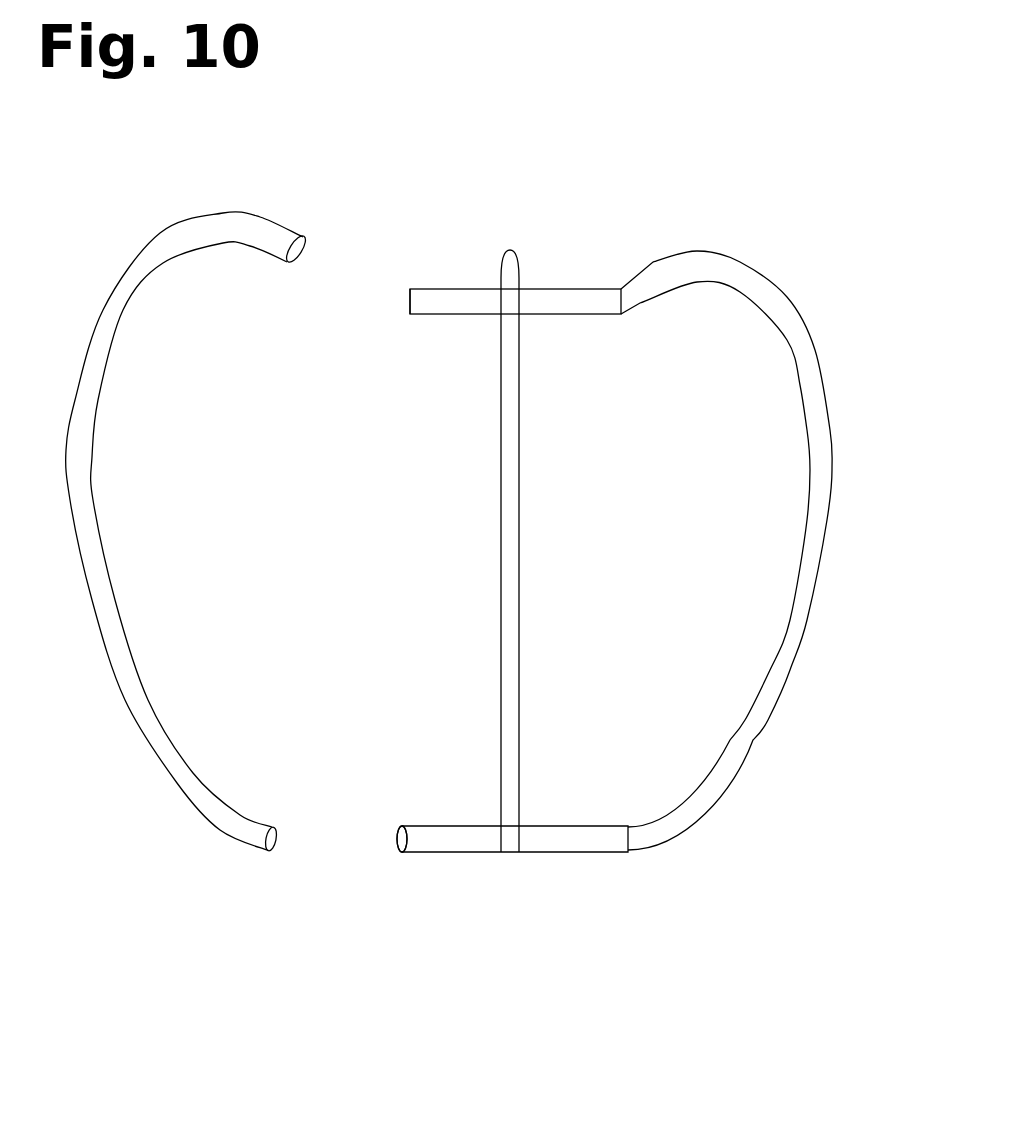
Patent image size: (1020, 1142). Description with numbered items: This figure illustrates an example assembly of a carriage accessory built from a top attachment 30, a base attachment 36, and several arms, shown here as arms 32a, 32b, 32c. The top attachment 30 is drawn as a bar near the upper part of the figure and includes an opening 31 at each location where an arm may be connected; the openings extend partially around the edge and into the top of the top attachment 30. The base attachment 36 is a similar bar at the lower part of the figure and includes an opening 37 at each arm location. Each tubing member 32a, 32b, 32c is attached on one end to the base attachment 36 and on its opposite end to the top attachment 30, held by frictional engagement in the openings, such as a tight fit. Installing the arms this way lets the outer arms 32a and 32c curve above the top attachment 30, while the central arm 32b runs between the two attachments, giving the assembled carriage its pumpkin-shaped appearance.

The top attachment 30 is at (541, 328).
The opening 31 is at (396, 285).
The arm 32a is at (173, 532).
The arm 32b is at (569, 551).
The arm 32c is at (753, 550).
The base attachment 36 is at (545, 865).
The opening 37 is at (382, 837).